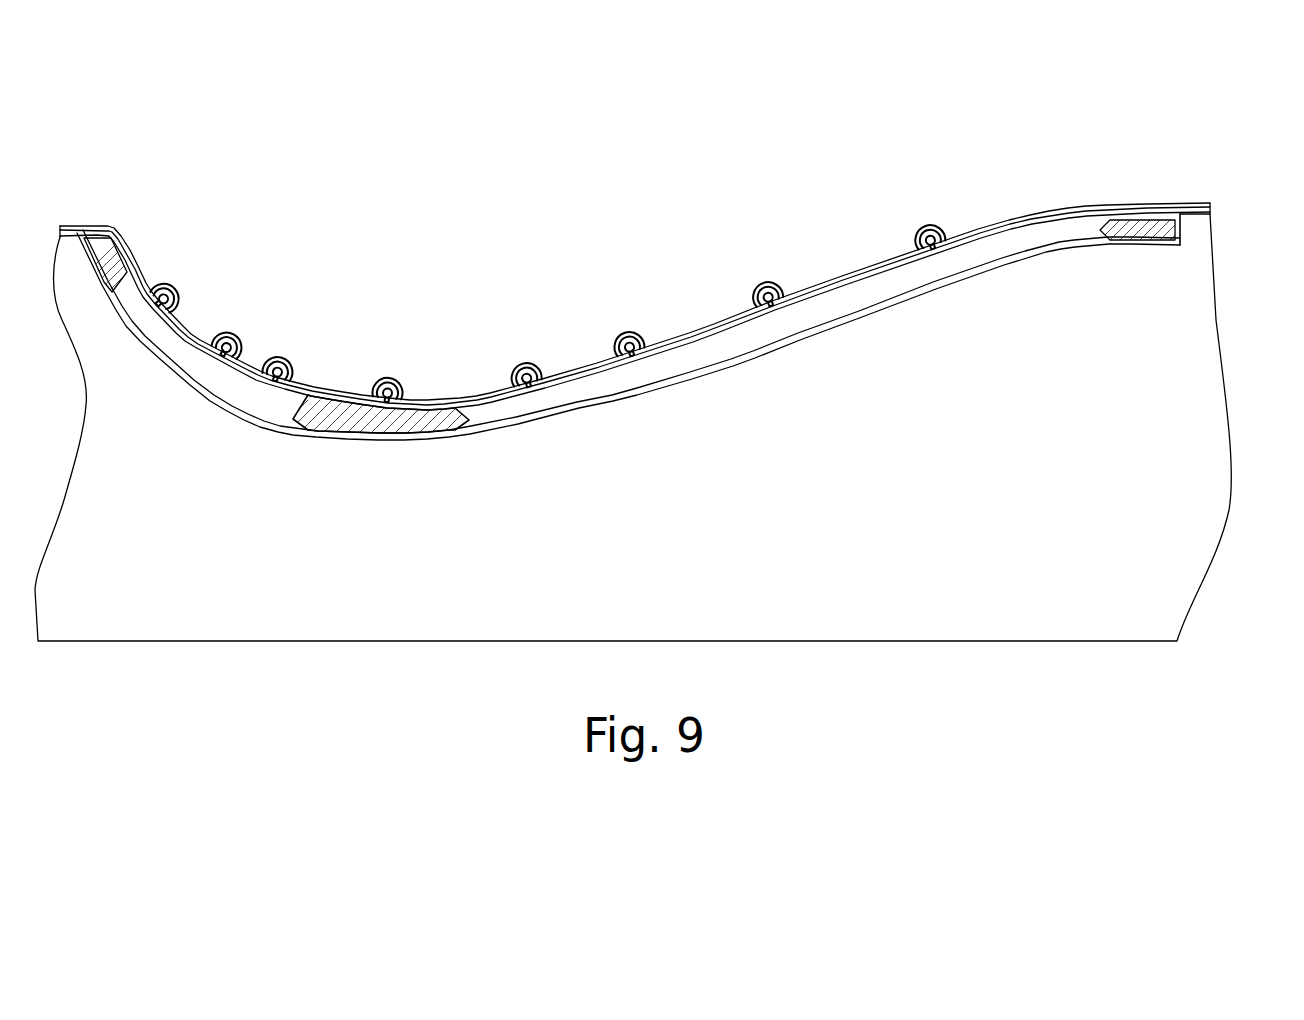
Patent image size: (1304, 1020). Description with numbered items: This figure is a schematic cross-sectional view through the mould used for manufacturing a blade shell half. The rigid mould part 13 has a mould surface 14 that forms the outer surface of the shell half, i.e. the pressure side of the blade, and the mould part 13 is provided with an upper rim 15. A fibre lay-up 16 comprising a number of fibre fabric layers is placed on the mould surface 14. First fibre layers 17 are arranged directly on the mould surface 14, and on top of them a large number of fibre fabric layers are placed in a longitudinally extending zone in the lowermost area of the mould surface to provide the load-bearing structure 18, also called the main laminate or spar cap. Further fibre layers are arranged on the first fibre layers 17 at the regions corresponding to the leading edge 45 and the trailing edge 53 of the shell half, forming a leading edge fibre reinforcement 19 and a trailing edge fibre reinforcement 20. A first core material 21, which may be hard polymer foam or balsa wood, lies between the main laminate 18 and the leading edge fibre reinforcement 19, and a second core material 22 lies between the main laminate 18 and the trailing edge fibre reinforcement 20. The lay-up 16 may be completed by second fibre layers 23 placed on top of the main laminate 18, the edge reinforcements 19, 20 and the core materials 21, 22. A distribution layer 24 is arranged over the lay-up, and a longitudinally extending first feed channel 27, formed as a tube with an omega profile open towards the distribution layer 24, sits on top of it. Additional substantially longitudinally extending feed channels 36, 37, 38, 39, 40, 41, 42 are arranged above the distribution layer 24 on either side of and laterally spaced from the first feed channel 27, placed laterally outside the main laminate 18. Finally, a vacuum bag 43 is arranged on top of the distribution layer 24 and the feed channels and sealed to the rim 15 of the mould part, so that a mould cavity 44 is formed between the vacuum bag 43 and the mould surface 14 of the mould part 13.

The mould part 13 is at (658, 539).
The mould surface 14 is at (628, 335).
The upper rim 15 is at (617, 257).
The fibre lay-up 16 is at (999, 219).
The first fibre layers 17 is at (628, 335).
The load-bearing structure 18 is at (433, 420).
The leading edge fibre reinforcement 19 is at (1150, 227).
The trailing edge fibre reinforcement 20 is at (639, 257).
The first core material 21 is at (628, 335).
The second core material 22 is at (723, 343).
The second fibre layers 23 is at (635, 301).
The distribution layer 24 is at (330, 397).
The first feed channel 27 is at (387, 378).
The additional feed channel 36 is at (167, 290).
The additional feed channel 37 is at (228, 337).
The additional feed channel 38 is at (280, 358).
The additional feed channel 39 is at (527, 362).
The additional feed channel 40 is at (628, 333).
The additional feed channel 41 is at (767, 283).
The additional feed channel 42 is at (924, 190).
The vacuum bag 43 is at (639, 257).
The mould cavity 44 is at (937, 225).
The leading edge 45 is at (80, 232).
The trailing edge 53 is at (1185, 193).